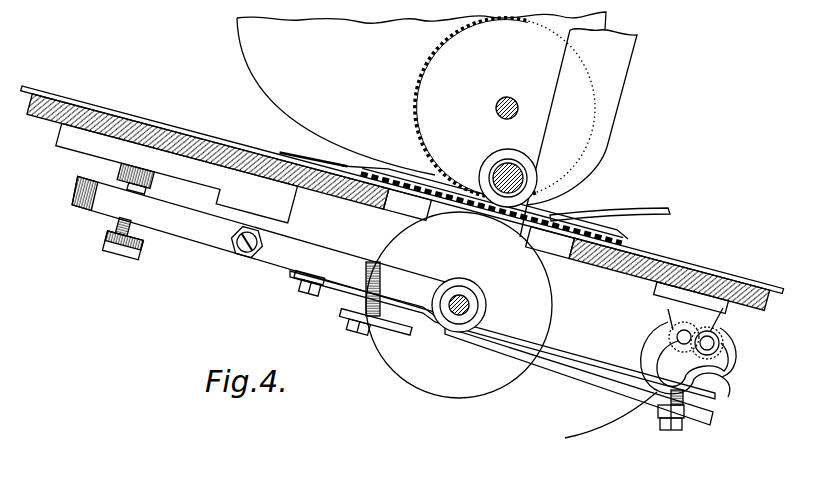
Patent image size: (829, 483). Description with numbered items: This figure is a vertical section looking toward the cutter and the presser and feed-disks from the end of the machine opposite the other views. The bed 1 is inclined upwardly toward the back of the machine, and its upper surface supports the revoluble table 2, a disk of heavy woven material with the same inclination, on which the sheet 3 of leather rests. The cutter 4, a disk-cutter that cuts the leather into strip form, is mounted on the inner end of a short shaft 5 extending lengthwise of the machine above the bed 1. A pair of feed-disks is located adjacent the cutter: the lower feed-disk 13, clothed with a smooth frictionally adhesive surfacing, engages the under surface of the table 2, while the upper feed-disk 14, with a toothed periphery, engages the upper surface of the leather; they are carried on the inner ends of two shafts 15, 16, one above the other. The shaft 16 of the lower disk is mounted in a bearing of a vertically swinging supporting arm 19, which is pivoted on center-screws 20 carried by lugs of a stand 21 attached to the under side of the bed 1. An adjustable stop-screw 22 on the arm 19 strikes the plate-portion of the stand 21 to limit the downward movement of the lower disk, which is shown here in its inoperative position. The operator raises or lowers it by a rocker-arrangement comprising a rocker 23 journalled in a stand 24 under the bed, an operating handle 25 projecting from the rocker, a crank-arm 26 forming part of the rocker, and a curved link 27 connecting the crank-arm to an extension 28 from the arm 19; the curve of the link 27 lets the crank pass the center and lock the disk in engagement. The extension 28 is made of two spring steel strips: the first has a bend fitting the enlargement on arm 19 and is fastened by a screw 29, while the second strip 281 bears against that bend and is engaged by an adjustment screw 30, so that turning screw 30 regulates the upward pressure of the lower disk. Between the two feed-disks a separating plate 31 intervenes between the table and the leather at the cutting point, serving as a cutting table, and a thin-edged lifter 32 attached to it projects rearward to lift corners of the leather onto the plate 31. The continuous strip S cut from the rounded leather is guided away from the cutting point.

The bed 1 is at (617, 272).
The revoluble table 2 is at (398, 202).
The sheet 3 is at (402, 189).
The cutter 4 is at (488, 158).
The shaft 5 is at (528, 176).
The lower feed-disk 13 is at (415, 390).
The upper feed-disk 14 is at (418, 84).
The shaft 15 is at (500, 100).
The shaft 16 is at (466, 297).
The supporting arm 19 is at (267, 247).
The center-screws 20 is at (247, 242).
The stand 21 is at (174, 177).
The stop-screw 22 is at (124, 237).
The rocker 23 is at (677, 337).
The stand 24 is at (691, 298).
The operating handle 25 is at (578, 430).
The crank-arm 26 is at (703, 352).
The link 27 is at (726, 392).
The extension 28 is at (558, 357).
The second strip 281 is at (486, 352).
The screw 29 is at (308, 284).
The adjustment screw 30 is at (374, 327).
The separating plate 31 is at (486, 200).
The lifter 32 is at (314, 160).
The continuous strip S is at (640, 212).